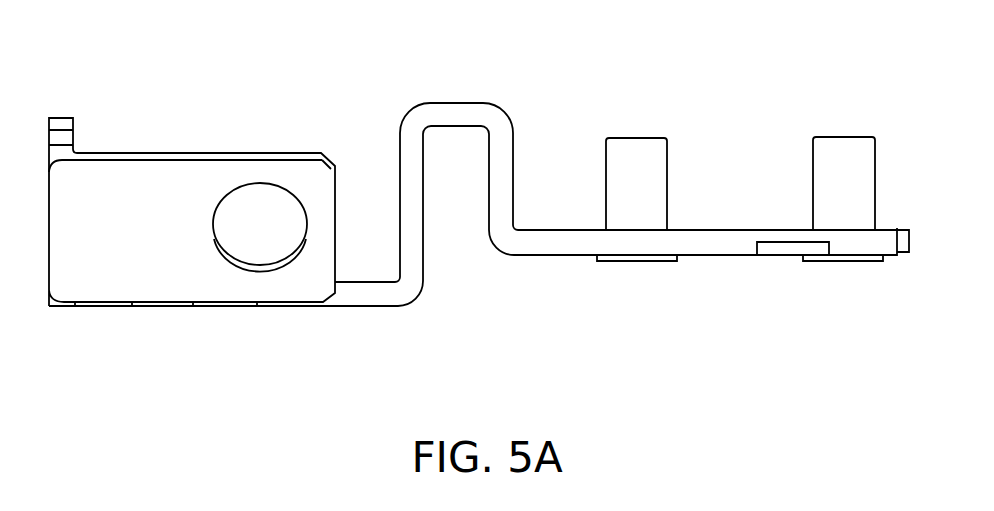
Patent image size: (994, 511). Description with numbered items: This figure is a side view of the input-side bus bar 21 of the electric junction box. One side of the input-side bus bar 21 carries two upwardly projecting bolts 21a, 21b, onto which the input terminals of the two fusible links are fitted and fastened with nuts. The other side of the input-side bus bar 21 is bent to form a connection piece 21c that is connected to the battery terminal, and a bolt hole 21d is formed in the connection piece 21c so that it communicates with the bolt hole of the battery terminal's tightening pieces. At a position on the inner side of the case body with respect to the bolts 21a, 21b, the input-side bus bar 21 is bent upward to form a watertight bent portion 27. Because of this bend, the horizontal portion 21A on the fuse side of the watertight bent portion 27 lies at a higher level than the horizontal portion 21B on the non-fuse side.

The input-side bus bar 21 is at (112, 128).
The bolt 21a is at (606, 170).
The bolt 21b is at (813, 170).
The connection piece 21c is at (143, 168).
The bolt hole 21d is at (257, 210).
The horizontal portion 21A is at (548, 257).
The horizontal portion 21B is at (360, 308).
The watertight bent portion 27 is at (453, 110).